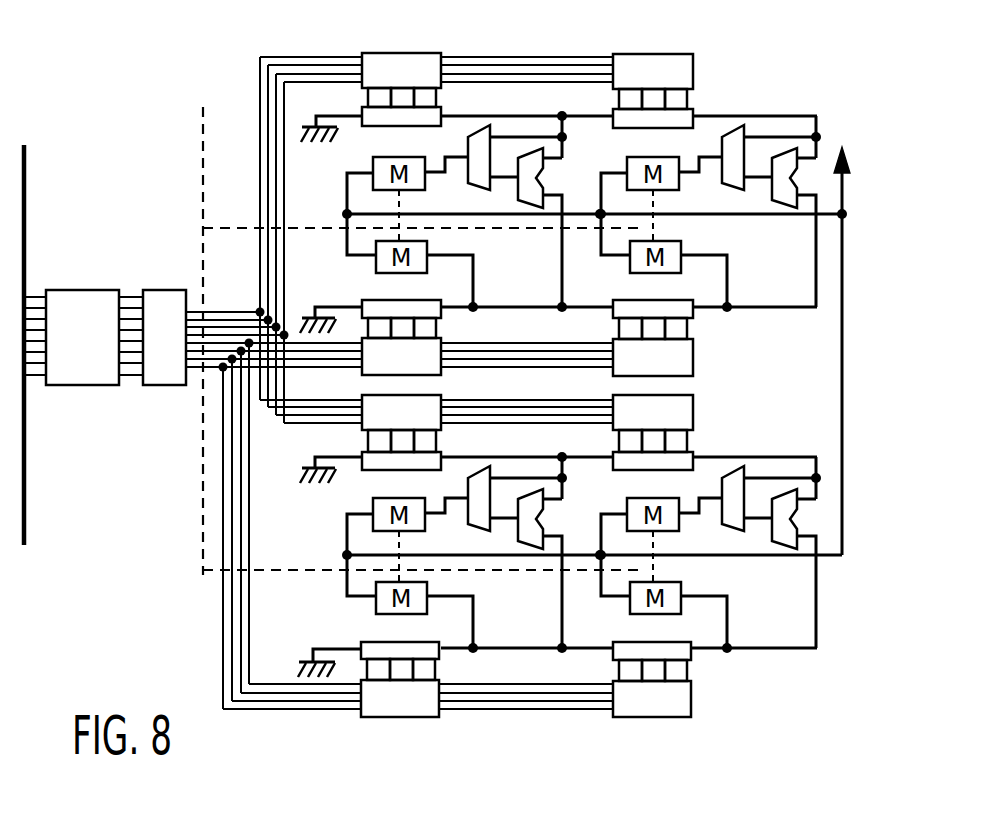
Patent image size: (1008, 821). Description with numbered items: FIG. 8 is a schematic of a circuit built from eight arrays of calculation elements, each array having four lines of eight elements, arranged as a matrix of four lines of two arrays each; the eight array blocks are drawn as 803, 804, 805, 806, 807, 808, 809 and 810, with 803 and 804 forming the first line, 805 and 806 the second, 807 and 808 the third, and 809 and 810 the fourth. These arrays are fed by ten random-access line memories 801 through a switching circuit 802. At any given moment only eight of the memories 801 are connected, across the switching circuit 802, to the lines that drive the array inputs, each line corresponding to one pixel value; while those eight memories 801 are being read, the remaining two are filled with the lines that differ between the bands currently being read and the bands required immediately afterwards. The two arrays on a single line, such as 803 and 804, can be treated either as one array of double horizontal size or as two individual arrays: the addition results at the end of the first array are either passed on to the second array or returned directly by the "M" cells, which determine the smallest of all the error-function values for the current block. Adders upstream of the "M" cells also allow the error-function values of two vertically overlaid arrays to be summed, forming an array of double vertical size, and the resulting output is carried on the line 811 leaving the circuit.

The random-access line memories 801 is at (87, 289).
The switching circuit 802 is at (162, 289).
The 4x8 switch 803 is at (362, 53).
The 4x8 switch 804 is at (693, 68).
The 4x8 switch 805 is at (441, 338).
The 4x8 switch 806 is at (692, 358).
The 4x8 switch 807 is at (441, 395).
The 4x8 switch 808 is at (693, 413).
The 4x8 switch 809 is at (365, 717).
The 4x8 switch 810 is at (663, 717).
The output line 811 is at (842, 385).